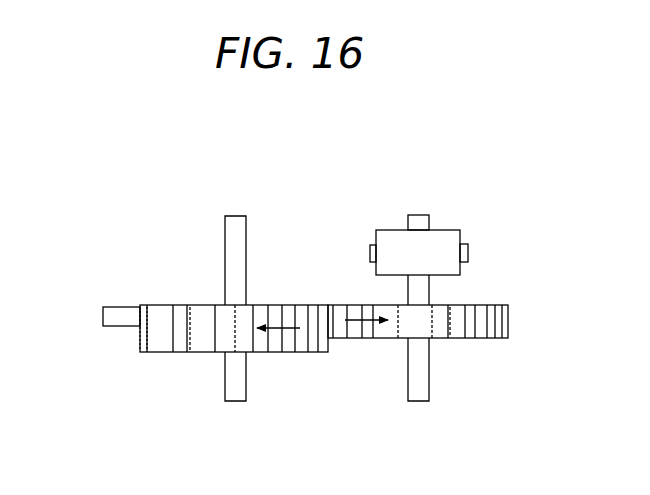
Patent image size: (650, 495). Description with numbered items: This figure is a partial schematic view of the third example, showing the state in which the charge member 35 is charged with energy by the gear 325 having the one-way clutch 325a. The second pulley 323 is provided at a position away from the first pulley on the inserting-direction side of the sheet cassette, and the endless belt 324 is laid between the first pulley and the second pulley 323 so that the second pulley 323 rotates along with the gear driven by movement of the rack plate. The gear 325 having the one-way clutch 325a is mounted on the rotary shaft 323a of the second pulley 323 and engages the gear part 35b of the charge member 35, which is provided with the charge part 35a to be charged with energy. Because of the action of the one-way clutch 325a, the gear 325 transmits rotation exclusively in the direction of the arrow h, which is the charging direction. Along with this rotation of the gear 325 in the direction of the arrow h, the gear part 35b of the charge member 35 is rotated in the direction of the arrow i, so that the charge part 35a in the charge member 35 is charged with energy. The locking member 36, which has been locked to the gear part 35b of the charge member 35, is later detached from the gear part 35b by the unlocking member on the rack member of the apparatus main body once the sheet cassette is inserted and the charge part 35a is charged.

The charge member 35 is at (130, 348).
The charge part 35a is at (190, 358).
The gear part 35b is at (160, 343).
The locking member 36 is at (120, 306).
The second pulley 323 is at (457, 230).
The rotary shaft 323a is at (418, 213).
The endless belt 324 is at (366, 250).
The gear 325 is at (508, 320).
The one-way clutch 325a is at (458, 342).
The arrow h is at (364, 341).
The arrow i is at (289, 304).